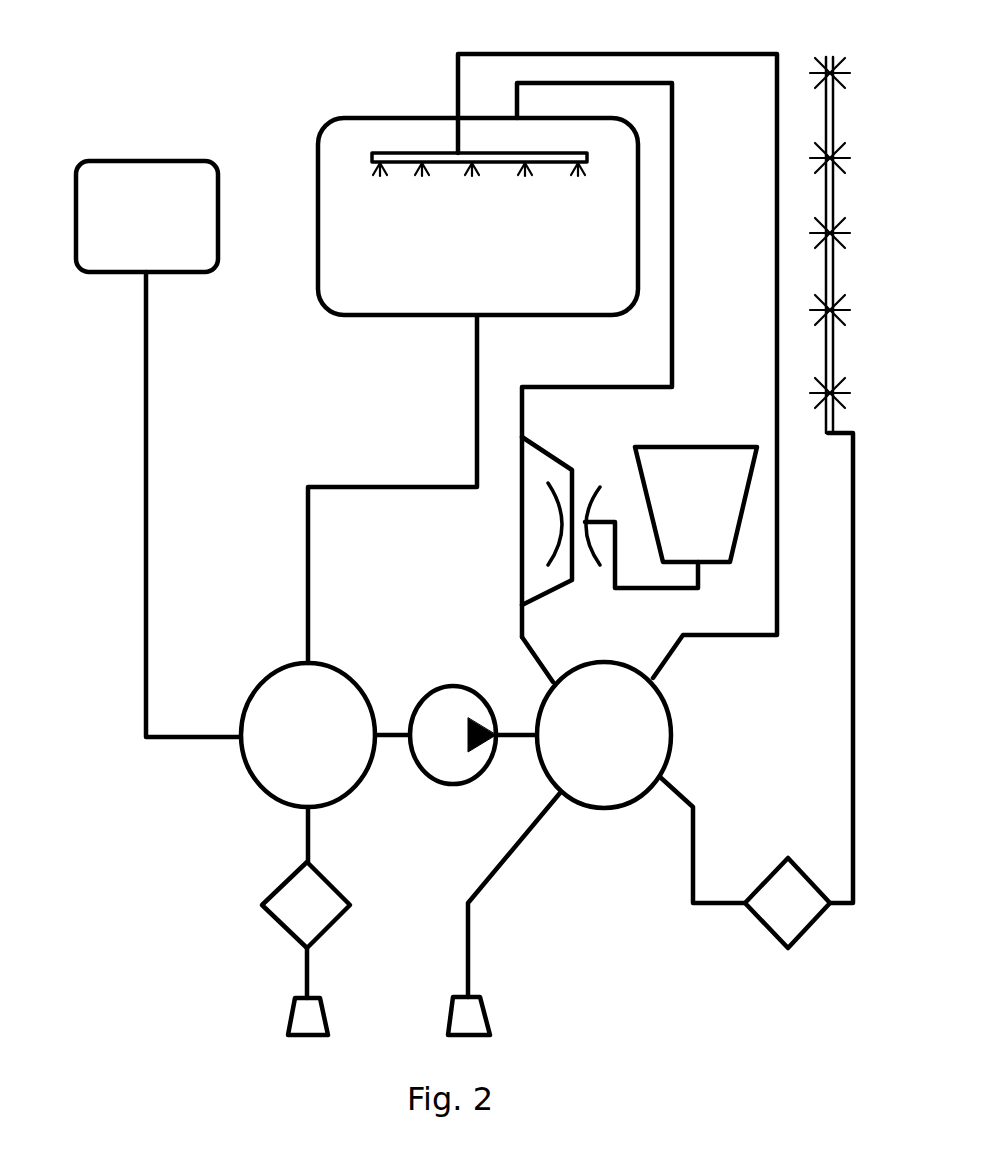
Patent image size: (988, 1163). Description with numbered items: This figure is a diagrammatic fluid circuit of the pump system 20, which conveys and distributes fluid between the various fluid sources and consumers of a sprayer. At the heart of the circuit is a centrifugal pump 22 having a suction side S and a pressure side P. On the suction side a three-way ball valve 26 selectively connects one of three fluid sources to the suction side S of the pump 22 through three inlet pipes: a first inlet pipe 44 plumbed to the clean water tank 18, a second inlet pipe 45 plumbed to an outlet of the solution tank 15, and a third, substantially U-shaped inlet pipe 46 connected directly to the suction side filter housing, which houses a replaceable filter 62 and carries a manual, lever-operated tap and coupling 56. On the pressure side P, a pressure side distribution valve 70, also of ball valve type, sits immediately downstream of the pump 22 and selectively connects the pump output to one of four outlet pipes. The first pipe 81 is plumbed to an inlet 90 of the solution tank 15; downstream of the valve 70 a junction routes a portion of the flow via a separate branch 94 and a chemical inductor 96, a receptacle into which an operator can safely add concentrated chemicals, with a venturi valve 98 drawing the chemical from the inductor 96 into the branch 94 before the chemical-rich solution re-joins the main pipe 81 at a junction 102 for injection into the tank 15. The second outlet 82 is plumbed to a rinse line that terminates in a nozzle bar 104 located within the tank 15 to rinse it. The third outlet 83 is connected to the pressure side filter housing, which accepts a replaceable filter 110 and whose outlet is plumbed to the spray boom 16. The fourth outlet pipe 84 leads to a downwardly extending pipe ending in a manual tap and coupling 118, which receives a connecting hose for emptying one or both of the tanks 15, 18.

The pump system 20 is at (78, 76).
The clean water tank 18 is at (85, 273).
The first inlet pipe 44 is at (203, 737).
The 3-way ball valve 26 is at (258, 790).
The second inlet pipe 45 is at (308, 607).
The solution tank 15 is at (330, 315).
The nozzle bar 104 is at (412, 152).
The inlet of solution tank 90 is at (520, 115).
The second pressure side outlet 82 is at (674, 653).
The junction 102 is at (527, 432).
The venturi valve 98 is at (590, 482).
The branch 94 is at (564, 582).
The chemical inductor 96 is at (727, 456).
The spray boom 16 is at (834, 116).
The first pressure side pipe 81 is at (535, 656).
The pressure side distribution valve 70 is at (614, 809).
The centrifugal pump 22 is at (447, 784).
The suction side S is at (393, 742).
The pressure side P is at (518, 735).
The third pressure side outlet 83 is at (682, 797).
The replaceable filter 110 is at (773, 920).
The fourth outlet pipe 84 is at (537, 828).
The manual tap and coupling 118 is at (483, 1016).
The third inlet pipe 46 is at (305, 838).
The replaceable filter 62 is at (282, 921).
The tap and coupling 56 is at (298, 1025).